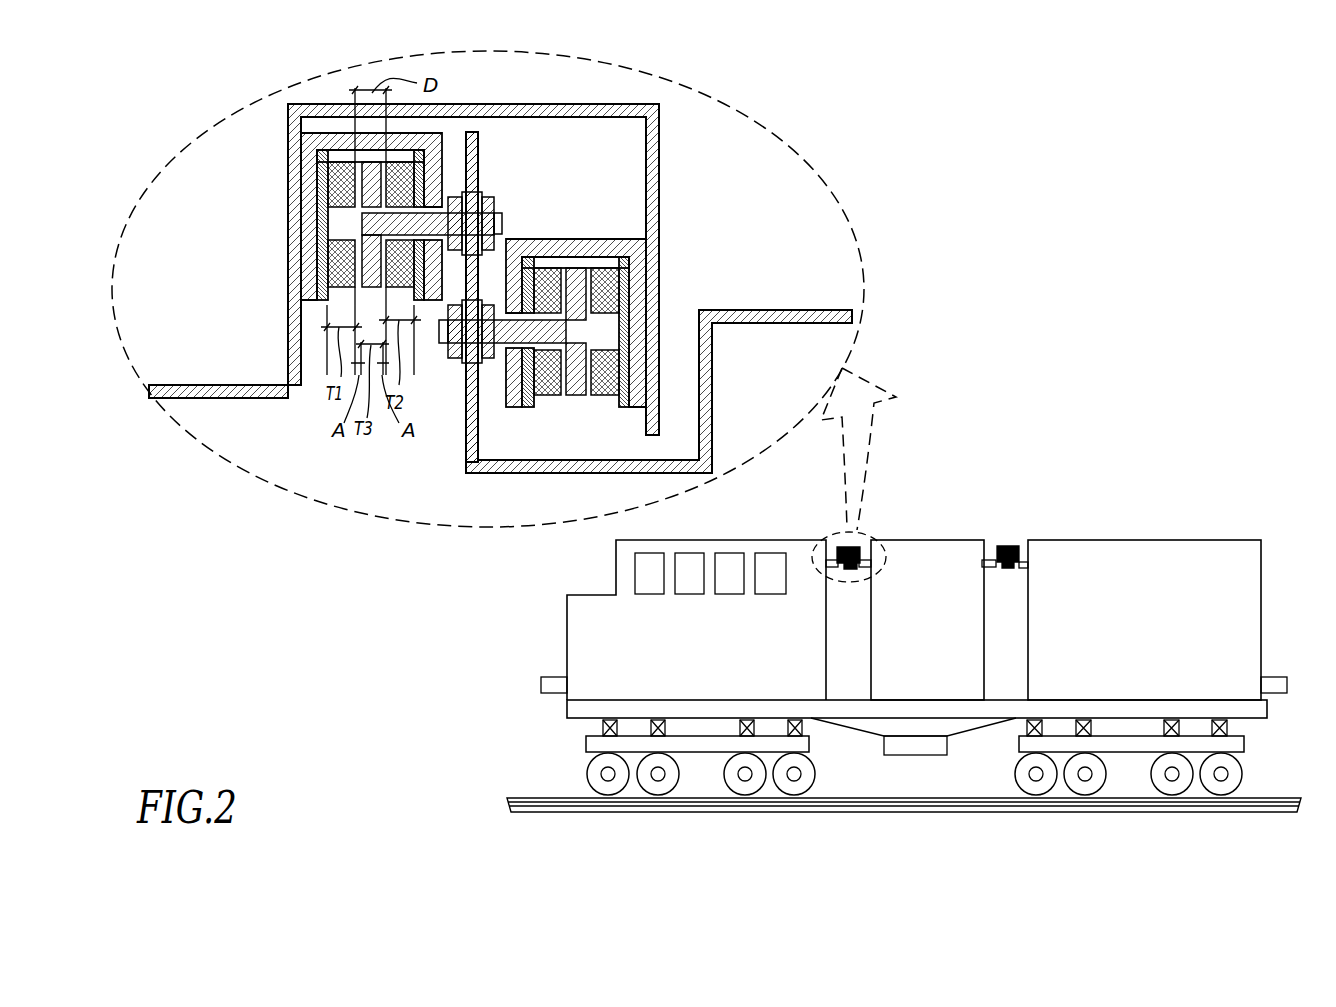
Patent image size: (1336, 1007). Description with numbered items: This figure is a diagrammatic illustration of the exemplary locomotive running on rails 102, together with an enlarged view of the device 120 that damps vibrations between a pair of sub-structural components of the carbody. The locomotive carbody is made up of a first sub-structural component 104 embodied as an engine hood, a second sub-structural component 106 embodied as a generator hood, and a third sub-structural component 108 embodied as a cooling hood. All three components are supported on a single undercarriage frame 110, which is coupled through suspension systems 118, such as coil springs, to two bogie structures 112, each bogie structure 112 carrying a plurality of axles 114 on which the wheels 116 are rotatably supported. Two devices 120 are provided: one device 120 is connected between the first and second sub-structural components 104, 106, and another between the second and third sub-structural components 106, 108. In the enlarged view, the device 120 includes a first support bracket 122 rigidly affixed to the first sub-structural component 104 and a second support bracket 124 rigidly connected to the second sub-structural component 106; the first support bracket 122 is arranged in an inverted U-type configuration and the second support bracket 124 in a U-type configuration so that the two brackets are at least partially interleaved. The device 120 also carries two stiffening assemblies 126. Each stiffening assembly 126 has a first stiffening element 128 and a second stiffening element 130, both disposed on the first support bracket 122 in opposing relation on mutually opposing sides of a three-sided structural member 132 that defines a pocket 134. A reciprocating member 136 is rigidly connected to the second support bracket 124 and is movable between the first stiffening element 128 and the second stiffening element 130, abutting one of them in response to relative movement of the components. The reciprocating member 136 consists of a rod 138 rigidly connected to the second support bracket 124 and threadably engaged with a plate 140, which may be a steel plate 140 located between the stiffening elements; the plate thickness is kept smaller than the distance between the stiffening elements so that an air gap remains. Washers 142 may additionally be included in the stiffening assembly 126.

The rails 102 is at (548, 797).
The first sub-structural component 104 is at (806, 540).
The second sub-structural component 106 is at (930, 540).
The third sub-structural component 108 is at (1150, 540).
The undercarriage frame 110 is at (1257, 707).
The bogie structure 112 is at (807, 740).
The axles 114 is at (656, 775).
The wheels 116 is at (665, 787).
The suspension systems 118 is at (603, 725).
The device 120 is at (841, 123).
The first support bracket 122 is at (290, 213).
The second support bracket 124 is at (743, 310).
The stiffening assembly 126 is at (338, 177).
The first stiffening element 128 is at (345, 268).
The second stiffening element 130 is at (403, 180).
The three-sided structural member 132 is at (443, 152).
The pocket 134 is at (342, 155).
The reciprocating member 136 is at (506, 222).
The rod 138 is at (502, 228).
The plate 140 is at (372, 199).
The washers 142 is at (482, 192).